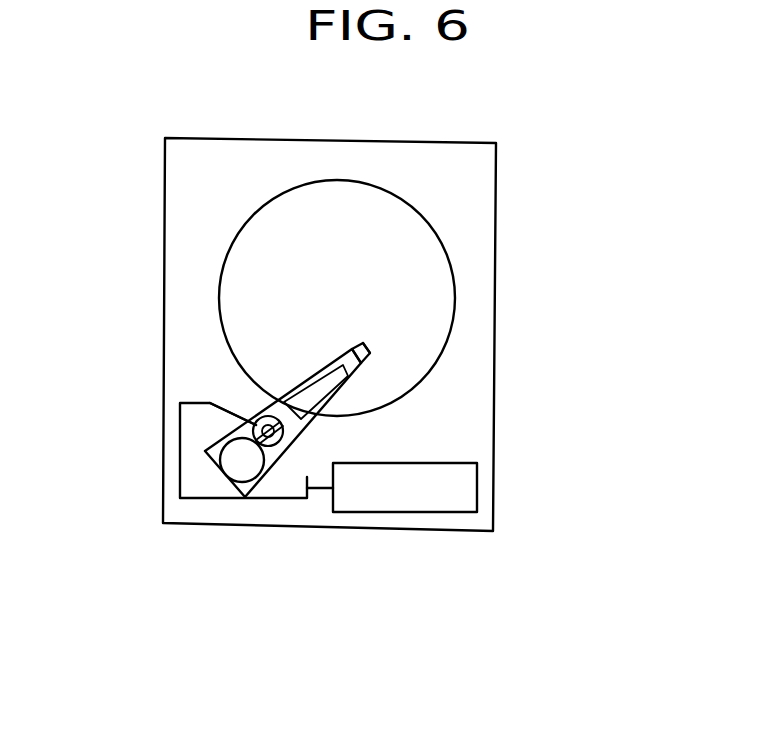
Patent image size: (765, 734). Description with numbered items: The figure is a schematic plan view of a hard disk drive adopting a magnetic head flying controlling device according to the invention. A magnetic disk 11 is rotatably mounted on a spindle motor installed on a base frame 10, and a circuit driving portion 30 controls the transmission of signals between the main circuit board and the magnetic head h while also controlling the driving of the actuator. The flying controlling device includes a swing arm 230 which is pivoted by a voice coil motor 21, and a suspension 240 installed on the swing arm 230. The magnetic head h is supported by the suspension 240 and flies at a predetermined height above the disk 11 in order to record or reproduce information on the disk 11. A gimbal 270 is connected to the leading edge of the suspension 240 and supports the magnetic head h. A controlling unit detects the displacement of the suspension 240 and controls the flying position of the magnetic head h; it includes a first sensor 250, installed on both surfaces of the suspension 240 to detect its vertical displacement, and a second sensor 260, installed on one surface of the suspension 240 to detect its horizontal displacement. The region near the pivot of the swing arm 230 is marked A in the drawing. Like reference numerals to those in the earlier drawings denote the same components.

The base frame 10 is at (488, 384).
The magnetic disk 11 is at (427, 242).
The voice coil motor 21 is at (205, 491).
The circuit driving portion 30 is at (465, 488).
The swing arm 230 is at (272, 404).
The suspension 240 is at (345, 387).
The first sensor 250 is at (318, 388).
The second sensor 260 is at (253, 431).
The gimbal 270 is at (346, 348).
The magnetic head h is at (367, 347).
The region A is at (268, 423).